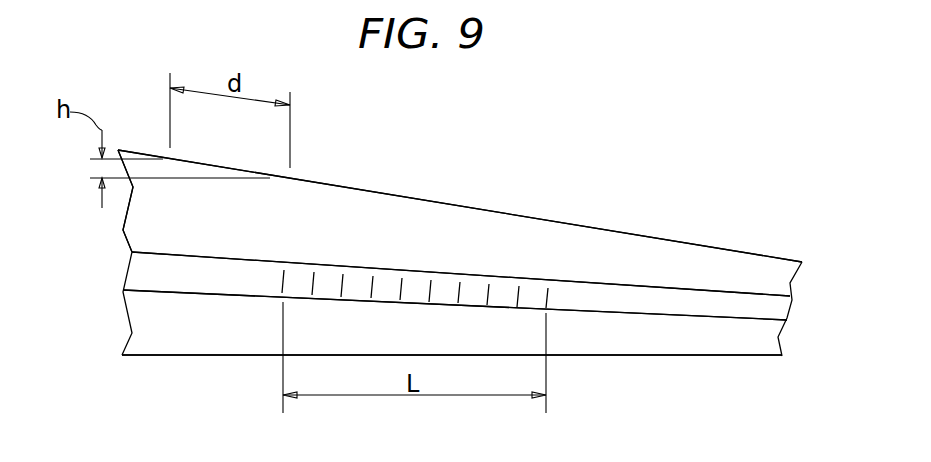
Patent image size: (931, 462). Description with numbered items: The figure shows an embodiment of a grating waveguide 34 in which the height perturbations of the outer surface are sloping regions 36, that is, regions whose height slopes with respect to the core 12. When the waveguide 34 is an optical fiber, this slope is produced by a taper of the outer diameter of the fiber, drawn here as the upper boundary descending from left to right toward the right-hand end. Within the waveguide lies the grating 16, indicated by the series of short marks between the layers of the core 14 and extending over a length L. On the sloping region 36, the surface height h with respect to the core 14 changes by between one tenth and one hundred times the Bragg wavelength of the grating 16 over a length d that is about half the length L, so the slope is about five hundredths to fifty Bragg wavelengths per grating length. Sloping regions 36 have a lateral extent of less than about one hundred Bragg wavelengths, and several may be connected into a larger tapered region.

The core 12 is at (800, 308).
The core 14 is at (333, 242).
The grating 16 is at (255, 277).
The grating waveguide 34 is at (708, 152).
The sloping region 36 is at (227, 168).